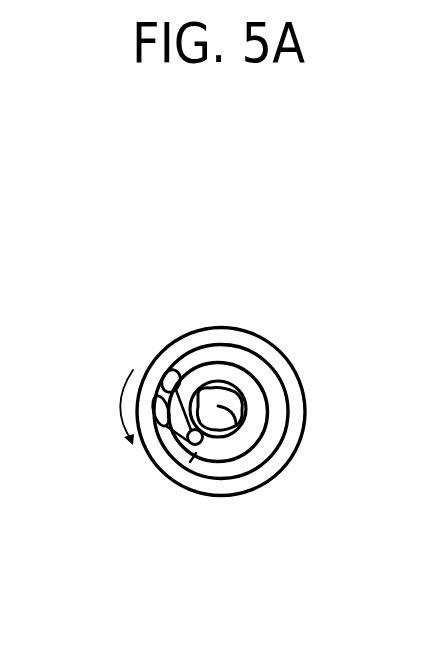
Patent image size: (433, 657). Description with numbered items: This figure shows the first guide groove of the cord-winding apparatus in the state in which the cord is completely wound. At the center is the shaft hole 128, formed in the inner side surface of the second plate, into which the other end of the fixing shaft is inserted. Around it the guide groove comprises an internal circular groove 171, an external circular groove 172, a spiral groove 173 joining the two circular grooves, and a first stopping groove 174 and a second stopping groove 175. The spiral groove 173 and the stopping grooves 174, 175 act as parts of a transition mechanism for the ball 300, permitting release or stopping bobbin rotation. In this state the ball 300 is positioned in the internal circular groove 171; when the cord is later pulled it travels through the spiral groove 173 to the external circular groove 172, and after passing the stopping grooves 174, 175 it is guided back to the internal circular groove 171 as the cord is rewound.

The shaft hole 128 is at (245, 430).
The internal circular groove 171 is at (222, 371).
The external circular groove 172 is at (199, 479).
The spiral groove 173 is at (190, 462).
The first stopping groove 174 is at (150, 395).
The second stopping groove 175 is at (163, 372).
The ball 300 is at (196, 444).